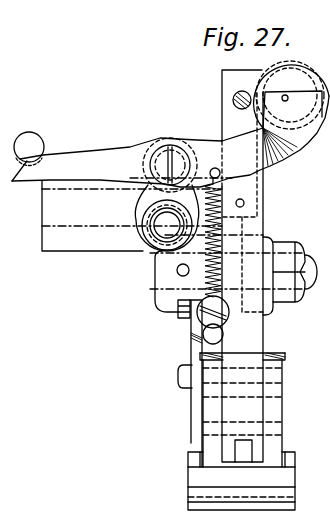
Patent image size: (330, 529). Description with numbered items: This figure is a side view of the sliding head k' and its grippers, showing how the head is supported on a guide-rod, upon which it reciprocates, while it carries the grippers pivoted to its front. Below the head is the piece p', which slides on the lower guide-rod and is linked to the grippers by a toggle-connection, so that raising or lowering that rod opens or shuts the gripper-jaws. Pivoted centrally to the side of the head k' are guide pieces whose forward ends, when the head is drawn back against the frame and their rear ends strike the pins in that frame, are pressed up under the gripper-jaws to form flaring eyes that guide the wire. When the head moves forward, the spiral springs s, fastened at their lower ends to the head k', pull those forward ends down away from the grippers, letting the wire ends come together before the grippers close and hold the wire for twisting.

The sliding head k' is at (132, 216).
The bracket k is at (172, 284).
The spiral springs s is at (146, 270).
The piece p' is at (241, 481).